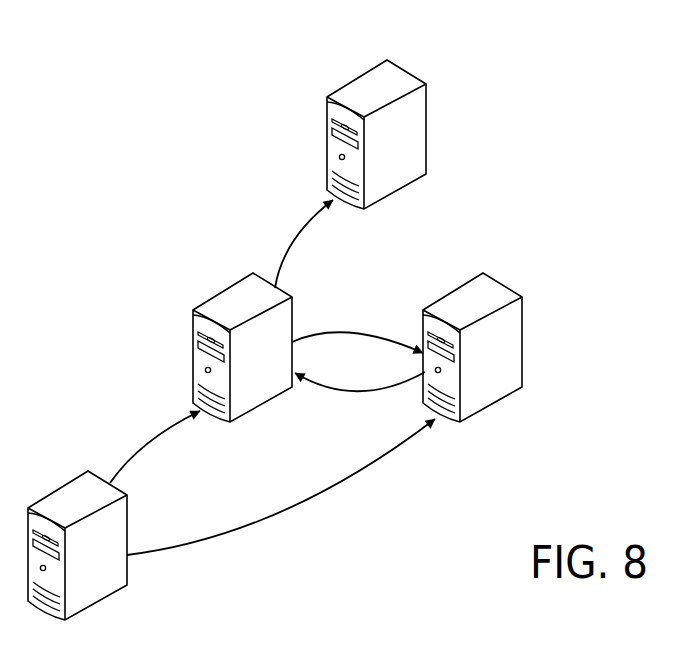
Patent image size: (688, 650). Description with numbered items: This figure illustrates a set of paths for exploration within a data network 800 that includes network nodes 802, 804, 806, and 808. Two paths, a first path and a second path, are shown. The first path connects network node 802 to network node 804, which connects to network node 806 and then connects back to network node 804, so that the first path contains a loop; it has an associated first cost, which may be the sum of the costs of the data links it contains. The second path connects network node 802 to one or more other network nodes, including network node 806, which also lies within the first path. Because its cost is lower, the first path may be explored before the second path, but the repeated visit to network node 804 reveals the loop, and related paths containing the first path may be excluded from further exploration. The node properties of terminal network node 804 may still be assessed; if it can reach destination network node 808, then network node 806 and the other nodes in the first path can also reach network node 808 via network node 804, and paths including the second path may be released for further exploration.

The data network 800 is at (146, 170).
The network node 802 is at (74, 499).
The network node 804 is at (238, 301).
The network node 806 is at (488, 302).
The destination network node 808 is at (372, 88).